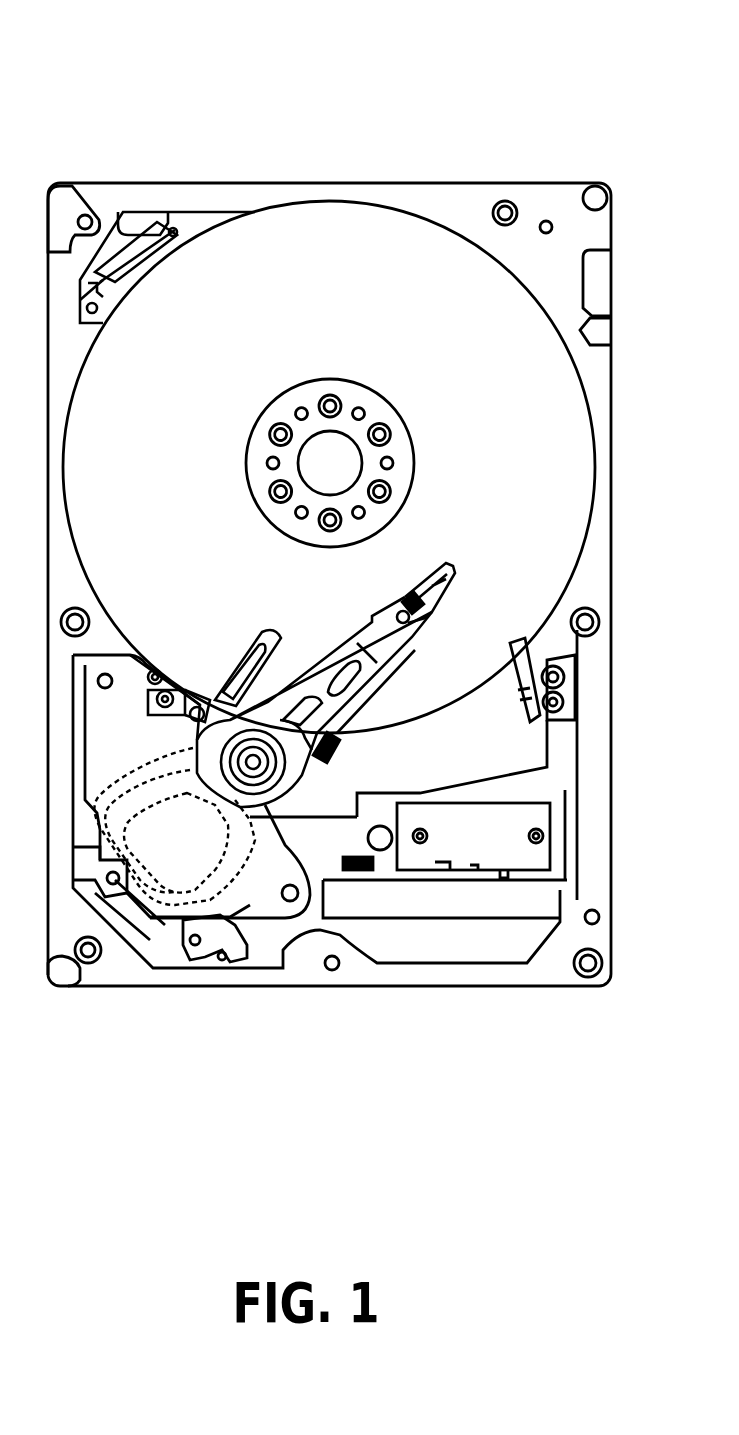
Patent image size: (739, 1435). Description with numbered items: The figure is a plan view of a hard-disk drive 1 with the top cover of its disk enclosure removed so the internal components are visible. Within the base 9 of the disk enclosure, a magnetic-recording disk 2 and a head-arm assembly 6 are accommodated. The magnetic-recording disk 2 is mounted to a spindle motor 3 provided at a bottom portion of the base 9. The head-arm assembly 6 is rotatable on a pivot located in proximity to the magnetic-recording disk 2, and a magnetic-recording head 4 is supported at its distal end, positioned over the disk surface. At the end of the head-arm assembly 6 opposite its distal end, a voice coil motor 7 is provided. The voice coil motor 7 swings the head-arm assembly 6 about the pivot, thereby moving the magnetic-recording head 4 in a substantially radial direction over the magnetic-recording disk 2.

The hard-disk drive 1 is at (356, 92).
The magnetic-recording disk 2 is at (330, 228).
The spindle motor 3 is at (356, 396).
The magnetic-recording head 4 is at (436, 553).
The head-arm assembly 6 is at (358, 757).
The voice coil motor 7 is at (126, 757).
The base 9 is at (110, 200).